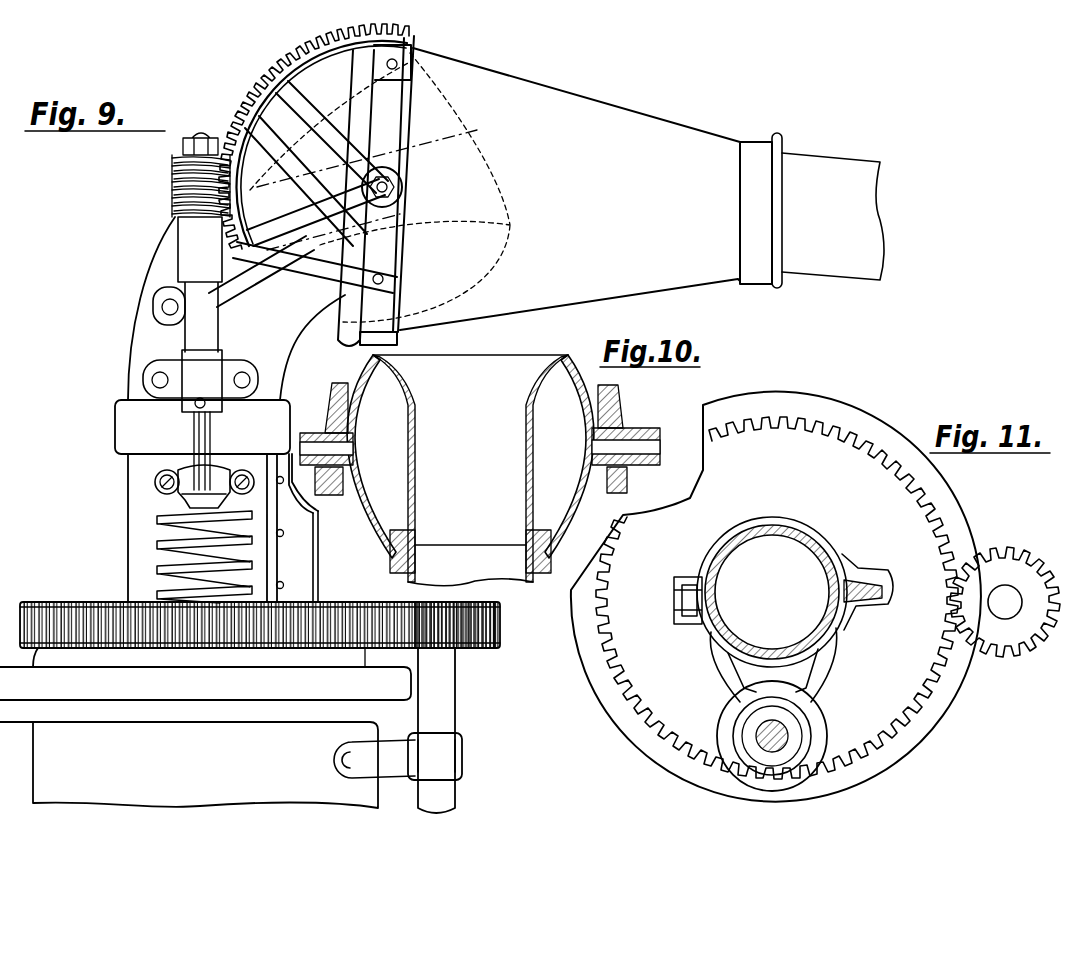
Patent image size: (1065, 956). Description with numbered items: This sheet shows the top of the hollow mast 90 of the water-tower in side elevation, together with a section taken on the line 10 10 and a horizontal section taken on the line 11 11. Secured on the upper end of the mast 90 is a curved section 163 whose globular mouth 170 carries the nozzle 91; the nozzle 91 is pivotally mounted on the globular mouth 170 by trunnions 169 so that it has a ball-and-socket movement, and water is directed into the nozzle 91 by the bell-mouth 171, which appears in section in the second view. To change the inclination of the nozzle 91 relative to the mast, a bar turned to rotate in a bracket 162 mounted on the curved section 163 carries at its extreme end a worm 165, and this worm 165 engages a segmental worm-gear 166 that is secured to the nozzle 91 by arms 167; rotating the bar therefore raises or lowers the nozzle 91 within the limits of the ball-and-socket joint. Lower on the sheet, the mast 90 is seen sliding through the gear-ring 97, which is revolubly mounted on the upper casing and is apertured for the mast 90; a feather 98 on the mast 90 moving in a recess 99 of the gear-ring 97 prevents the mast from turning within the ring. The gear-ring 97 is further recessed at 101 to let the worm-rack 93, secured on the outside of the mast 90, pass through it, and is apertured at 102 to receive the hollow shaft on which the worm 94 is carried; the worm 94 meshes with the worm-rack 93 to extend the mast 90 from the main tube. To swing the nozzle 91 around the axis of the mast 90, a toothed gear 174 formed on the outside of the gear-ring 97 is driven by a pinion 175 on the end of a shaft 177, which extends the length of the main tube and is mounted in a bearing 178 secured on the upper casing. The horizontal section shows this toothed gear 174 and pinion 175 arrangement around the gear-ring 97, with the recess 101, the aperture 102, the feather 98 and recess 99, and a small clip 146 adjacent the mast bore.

In FIG. 9, the section line 10 10 is at (465, 142).
In FIG. 9, the section line 11 11 is at (497, 607).
In FIG. 9, the mast 90 is at (128, 492).
In FIG. 9, the nozzle 91 is at (688, 288).
In FIG. 9, the worm-rack 93 is at (158, 469).
In FIG. 11, the worm-rack 93 is at (818, 666).
In FIG. 9, the worm 94 is at (158, 517).
In FIG. 11, the gear-ring 97 is at (622, 665).
In FIG. 9, the feather 98 is at (316, 556).
In FIG. 11, the feather 98 is at (882, 602).
In FIG. 11, the recess 99 is at (893, 591).
In FIG. 11, the recess 101 is at (722, 660).
In FIG. 11, the aperture 102 is at (810, 702).
In FIG. 11, the bracket 146 is at (674, 604).
In FIG. 9, the bracket 162 is at (221, 323).
In FIG. 9, the curved section 163 is at (143, 338).
In FIG. 9, the worm 165 is at (173, 183).
In FIG. 9, the segmental worm-gear 166 is at (238, 140).
In FIG. 9, the arms 167 is at (308, 125).
In FIG. 9, the trunnions 169 is at (402, 193).
In FIG. 9, the globular mouth 170 is at (318, 318).
In FIG. 10, the globular mouth 170 is at (360, 524).
In FIG. 10, the bell-mouth 171 is at (480, 470).
In FIG. 9, the toothed gear 174 is at (62, 602).
In FIG. 11, the toothed gear 174 is at (920, 505).
In FIG. 9, the pinion 175 is at (495, 626).
In FIG. 11, the pinion 175 is at (998, 547).
In FIG. 9, the shaft 177 is at (453, 694).
In FIG. 11, the shaft 177 is at (1005, 585).
In FIG. 9, the bearing 178 is at (423, 752).